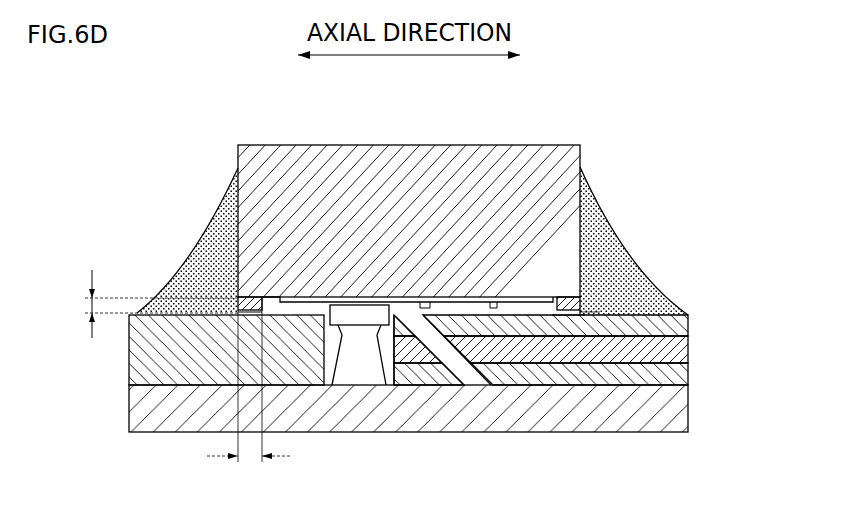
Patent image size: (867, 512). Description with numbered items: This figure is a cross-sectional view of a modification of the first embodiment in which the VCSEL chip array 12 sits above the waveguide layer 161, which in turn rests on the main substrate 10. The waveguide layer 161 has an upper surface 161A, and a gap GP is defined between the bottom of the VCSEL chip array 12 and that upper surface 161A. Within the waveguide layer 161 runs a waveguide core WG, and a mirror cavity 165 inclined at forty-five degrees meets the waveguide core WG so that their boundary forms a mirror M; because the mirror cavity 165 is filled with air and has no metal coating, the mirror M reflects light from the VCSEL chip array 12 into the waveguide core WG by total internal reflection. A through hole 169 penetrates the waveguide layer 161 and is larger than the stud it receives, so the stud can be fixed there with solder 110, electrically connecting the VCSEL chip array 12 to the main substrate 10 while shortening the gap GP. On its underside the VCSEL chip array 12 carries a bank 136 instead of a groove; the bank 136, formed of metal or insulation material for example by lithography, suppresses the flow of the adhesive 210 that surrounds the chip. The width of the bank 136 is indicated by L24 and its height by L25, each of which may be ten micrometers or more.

The VCSEL chip array 12 is at (555, 143).
The adhesive 210 is at (197, 240).
The waveguide layer 161 is at (129, 363).
The upper surface 161A is at (623, 312).
The waveguide core WG is at (689, 348).
The gap GP is at (594, 309).
The mirror cavity 165 is at (460, 382).
The mirror M is at (458, 357).
The solder 110 is at (396, 372).
The main substrate 10 is at (129, 408).
The through hole 169 is at (343, 370).
The bank 136 is at (248, 318).
The height of the bank L25 is at (139, 304).
The width of the bank L24 is at (249, 392).